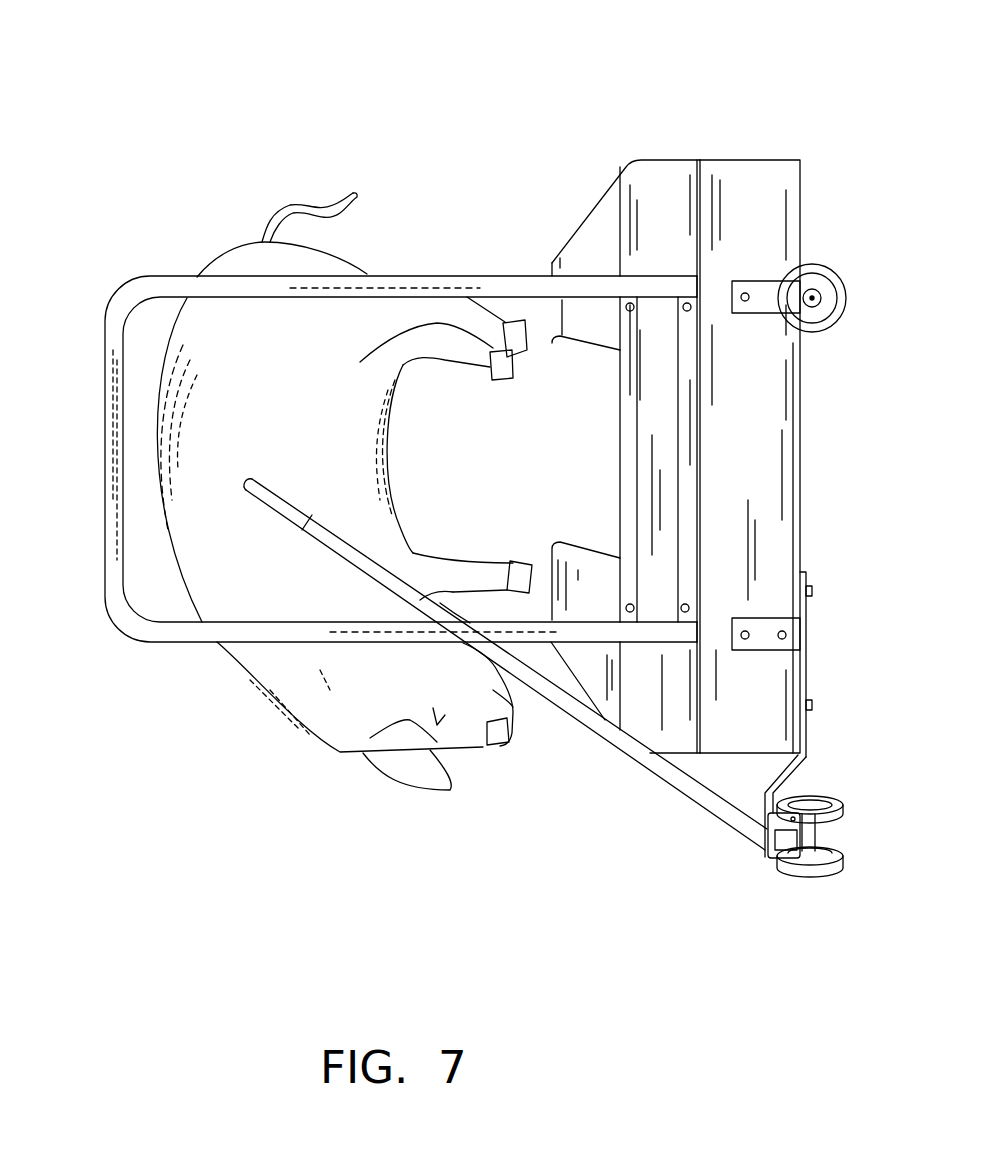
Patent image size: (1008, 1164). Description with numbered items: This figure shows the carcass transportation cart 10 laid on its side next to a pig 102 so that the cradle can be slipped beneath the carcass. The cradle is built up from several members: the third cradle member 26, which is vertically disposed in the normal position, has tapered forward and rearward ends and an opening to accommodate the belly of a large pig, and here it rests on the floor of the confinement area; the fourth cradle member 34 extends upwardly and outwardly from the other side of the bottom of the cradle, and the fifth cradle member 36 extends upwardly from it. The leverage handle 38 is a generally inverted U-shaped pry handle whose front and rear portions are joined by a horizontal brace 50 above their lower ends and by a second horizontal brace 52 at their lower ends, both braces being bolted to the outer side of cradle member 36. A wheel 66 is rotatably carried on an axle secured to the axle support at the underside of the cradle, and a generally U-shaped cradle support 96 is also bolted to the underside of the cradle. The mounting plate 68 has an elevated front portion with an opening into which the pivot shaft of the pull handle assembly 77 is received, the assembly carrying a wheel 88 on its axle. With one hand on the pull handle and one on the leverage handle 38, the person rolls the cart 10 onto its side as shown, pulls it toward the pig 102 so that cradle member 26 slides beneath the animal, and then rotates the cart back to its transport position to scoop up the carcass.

The carcass transportation cart 10 is at (828, 484).
The third cradle member 26 is at (668, 418).
The fourth cradle member 34 is at (748, 190).
The fifth cradle member 36 is at (665, 183).
The leverage handle 38 is at (101, 600).
The brace 50 is at (622, 503).
The brace 52 is at (688, 358).
The wheel 66 is at (830, 272).
The mounting plate 68 is at (818, 751).
The pull handle assembly 77 is at (615, 804).
The wheel 88 is at (848, 876).
The cradle support 96 is at (768, 630).
The pig 102 is at (193, 448).